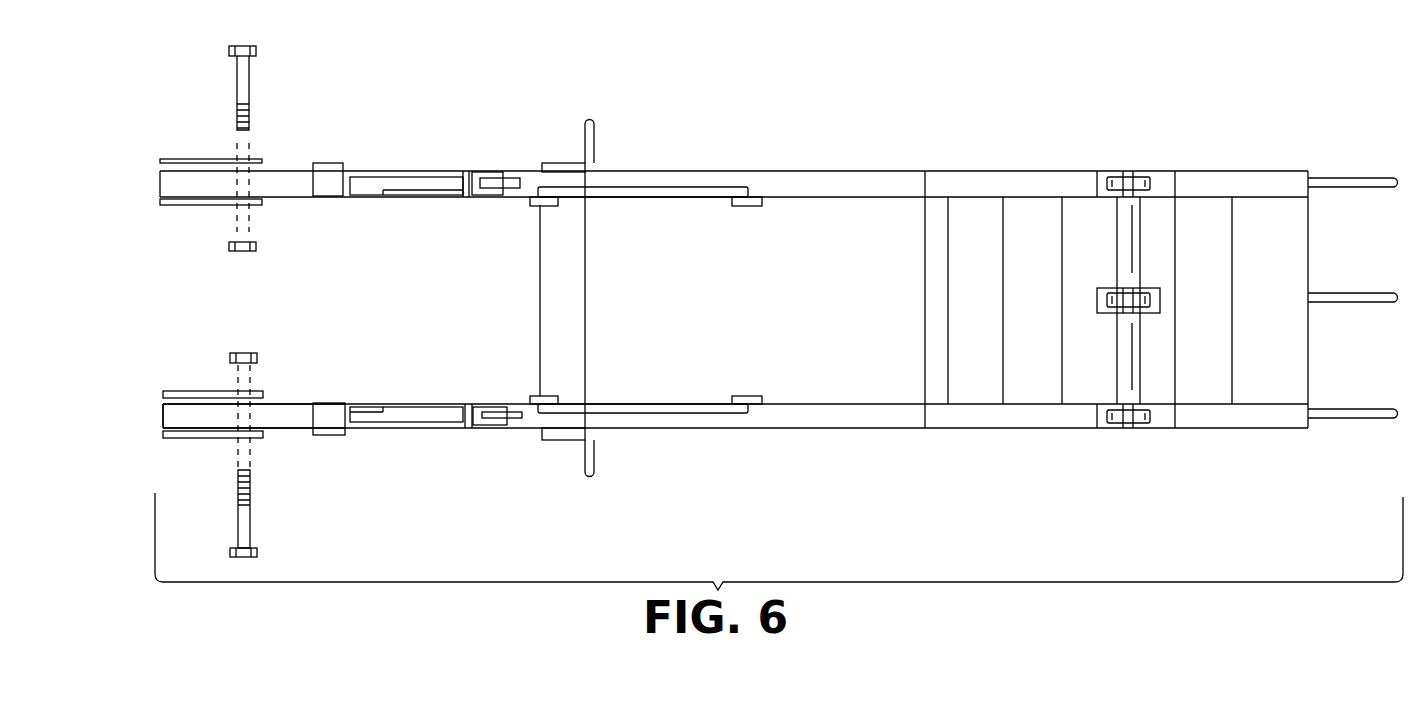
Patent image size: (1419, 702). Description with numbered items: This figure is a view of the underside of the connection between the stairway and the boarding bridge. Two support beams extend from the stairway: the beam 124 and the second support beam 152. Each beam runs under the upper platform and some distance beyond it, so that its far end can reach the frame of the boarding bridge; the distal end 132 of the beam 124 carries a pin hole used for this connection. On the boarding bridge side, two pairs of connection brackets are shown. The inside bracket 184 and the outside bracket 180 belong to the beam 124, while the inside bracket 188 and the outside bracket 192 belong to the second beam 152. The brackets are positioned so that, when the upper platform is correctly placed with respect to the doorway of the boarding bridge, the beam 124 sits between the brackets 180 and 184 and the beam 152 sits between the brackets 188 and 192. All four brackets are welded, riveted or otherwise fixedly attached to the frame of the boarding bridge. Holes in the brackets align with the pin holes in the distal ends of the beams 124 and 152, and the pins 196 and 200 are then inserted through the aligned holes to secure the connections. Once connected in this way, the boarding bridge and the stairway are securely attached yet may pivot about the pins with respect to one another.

The beam 124 is at (493, 427).
The distal end 132 is at (163, 418).
The second support beam 152 is at (398, 170).
The outside bracket 180 is at (214, 440).
The inside bracket 184 is at (196, 391).
The inside bracket 188 is at (210, 206).
The outside bracket 192 is at (186, 158).
The pin 196 is at (252, 524).
The pin 200 is at (250, 86).